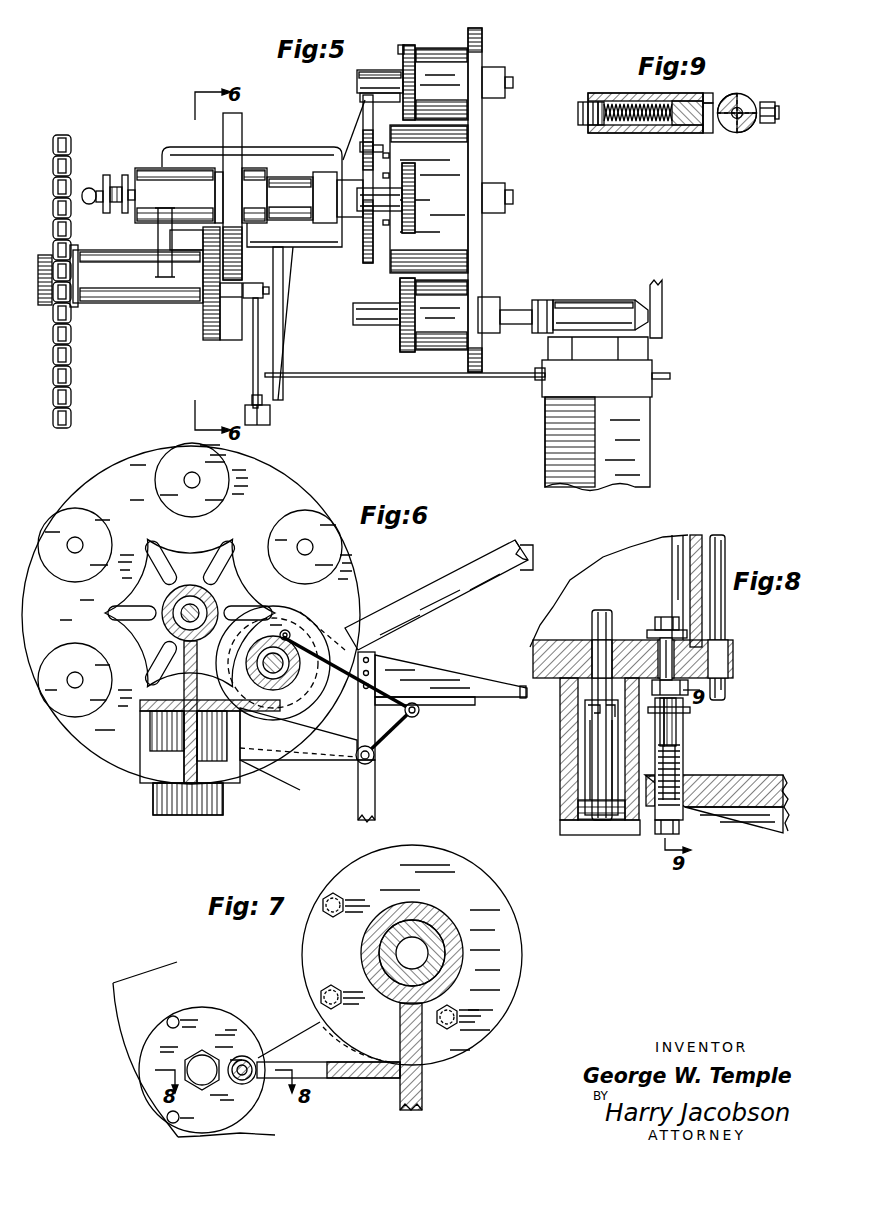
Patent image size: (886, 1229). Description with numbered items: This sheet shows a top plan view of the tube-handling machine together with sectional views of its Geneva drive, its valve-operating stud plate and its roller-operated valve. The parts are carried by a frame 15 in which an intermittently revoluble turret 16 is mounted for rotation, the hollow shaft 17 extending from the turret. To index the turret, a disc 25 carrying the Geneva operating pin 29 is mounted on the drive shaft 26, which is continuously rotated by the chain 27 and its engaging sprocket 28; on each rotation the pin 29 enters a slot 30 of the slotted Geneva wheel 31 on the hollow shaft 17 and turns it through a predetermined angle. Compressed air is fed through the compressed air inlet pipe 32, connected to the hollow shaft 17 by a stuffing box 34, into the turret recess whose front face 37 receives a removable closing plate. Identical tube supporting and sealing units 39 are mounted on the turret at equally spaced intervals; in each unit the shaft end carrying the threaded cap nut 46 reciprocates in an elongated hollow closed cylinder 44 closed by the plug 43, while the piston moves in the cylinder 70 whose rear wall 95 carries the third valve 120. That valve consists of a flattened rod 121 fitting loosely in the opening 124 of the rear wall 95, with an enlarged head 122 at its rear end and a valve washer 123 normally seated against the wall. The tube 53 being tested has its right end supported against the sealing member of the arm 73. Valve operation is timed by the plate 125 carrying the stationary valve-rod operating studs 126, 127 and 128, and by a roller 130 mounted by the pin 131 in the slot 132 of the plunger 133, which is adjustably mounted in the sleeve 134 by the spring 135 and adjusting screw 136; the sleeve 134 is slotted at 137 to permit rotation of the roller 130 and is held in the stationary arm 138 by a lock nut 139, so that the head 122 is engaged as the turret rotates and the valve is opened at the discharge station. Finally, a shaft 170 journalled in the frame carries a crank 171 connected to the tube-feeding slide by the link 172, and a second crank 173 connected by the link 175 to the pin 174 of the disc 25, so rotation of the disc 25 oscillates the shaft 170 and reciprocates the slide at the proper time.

In FIG. 5, the frame 15 is at (287, 152).
In FIG. 6, the frame 15 is at (360, 805).
In FIG. 5, the turret 16 is at (482, 45).
In FIG. 6, the turret 16 is at (280, 476).
In FIG. 5, the hollow shaft 17 is at (275, 190).
In FIG. 6, the hollow shaft 17 is at (190, 585).
In FIG. 7, the hollow shaft 17 is at (405, 905).
In FIG. 5, the disc 25 is at (203, 318).
In FIG. 6, the disc 25 is at (318, 640).
In FIG. 5, the drive shaft 26 is at (44, 265).
In FIG. 6, the drive shaft 26 is at (300, 690).
In FIG. 5, the chain 27 is at (70, 141).
In FIG. 5, the sprocket 28 is at (70, 303).
In FIG. 5, the Geneva operating pin 29 is at (232, 340).
In FIG. 6, the Geneva operating pin 29 is at (330, 645).
In FIG. 6, the slot 30 is at (228, 545).
In FIG. 5, the slotted Geneva wheel 31 is at (242, 128).
In FIG. 6, the slotted Geneva wheel 31 is at (210, 555).
In FIG. 5, the compressed air inlet pipe 32 is at (90, 188).
In FIG. 5, the stuffing box 34 is at (118, 178).
In FIG. 5, the front face 37 is at (482, 146).
In FIG. 5, the tube supporting and sealing unit 39 is at (437, 47).
In FIG. 6, the tube supporting and sealing unit 39 is at (290, 512).
In FIG. 8, the tube supporting and sealing unit 39 is at (660, 538).
In FIG. 7, the tube supporting and sealing unit 39 is at (232, 1008).
In FIG. 8, the plug 43 is at (585, 825).
In FIG. 5, the hollow closed cylinder 44 is at (376, 80).
In FIG. 8, the hollow closed cylinder 44 is at (560, 760).
In FIG. 7, the hollow closed cylinder 44 is at (202, 1052).
In FIG. 8, the threaded cap nut 46 is at (612, 722).
In FIG. 5, the tube 53 is at (582, 308).
In FIG. 5, the cylinder 70 is at (420, 52).
In FIG. 8, the cylinder 70 is at (717, 535).
In FIG. 5, the arm 73 is at (662, 308).
In FIG. 5, the rear wall 95 is at (400, 45).
In FIG. 8, the rear wall 95 is at (545, 680).
In FIG. 8, the third valve 120 is at (665, 616).
In FIG. 7, the third valve 120 is at (243, 1056).
In FIG. 8, the flattened rod 121 is at (660, 645).
In FIG. 9, the enlarged head 122 is at (767, 102).
In FIG. 8, the enlarged head 122 is at (690, 690).
In FIG. 8, the valve washer 123 is at (650, 630).
In FIG. 8, the opening 124 is at (733, 668).
In FIG. 5, the plate 125 is at (368, 262).
In FIG. 7, the plate 125 is at (470, 868).
In FIG. 7, the valve-rod operating stud 126 is at (458, 1012).
In FIG. 7, the valve-rod operating stud 127 is at (334, 918).
In FIG. 7, the valve-rod operating stud 128 is at (342, 1005).
In FIG. 9, the roller 130 is at (738, 133).
In FIG. 8, the roller 130 is at (676, 733).
In FIG. 9, the pin 131 is at (740, 107).
In FIG. 8, the pin 131 is at (690, 712).
In FIG. 9, the slot 132 is at (710, 133).
In FIG. 8, the slot 132 is at (683, 741).
In FIG. 9, the plunger 133 is at (684, 126).
In FIG. 8, the plunger 133 is at (683, 750).
In FIG. 9, the sleeve 134 is at (608, 126).
In FIG. 8, the sleeve 134 is at (683, 764).
In FIG. 9, the spring 135 is at (601, 126).
In FIG. 9, the adjusting screw 136 is at (583, 125).
In FIG. 8, the adjusting screw 136 is at (679, 827).
In FIG. 7, the adjusting screw 136 is at (242, 1084).
In FIG. 9, the slot 137 is at (707, 93).
In FIG. 8, the stationary arm 138 is at (735, 778).
In FIG. 7, the stationary arm 138 is at (340, 1078).
In FIG. 8, the lock nut 139 is at (680, 778).
In FIG. 5, the shaft 170 is at (455, 377).
In FIG. 6, the shaft 170 is at (375, 758).
In FIG. 6, the crank 171 is at (358, 718).
In FIG. 6, the link 172 is at (462, 705).
In FIG. 5, the crank 173 is at (270, 410).
In FIG. 6, the crank 173 is at (392, 732).
In FIG. 5, the pin 174 is at (255, 283).
In FIG. 6, the pin 174 is at (287, 630).
In FIG. 5, the link 175 is at (253, 378).
In FIG. 6, the link 175 is at (380, 693).